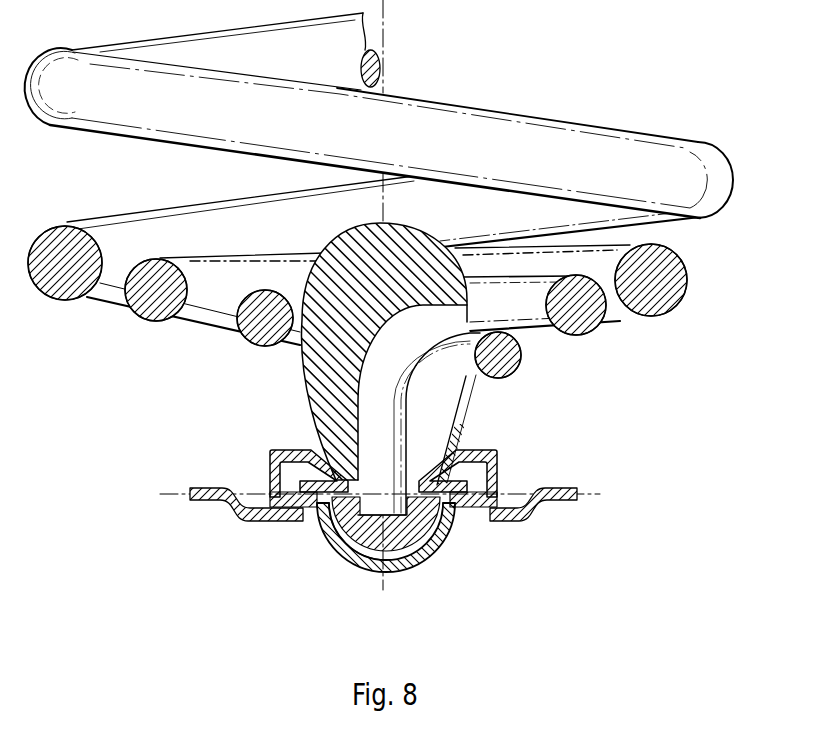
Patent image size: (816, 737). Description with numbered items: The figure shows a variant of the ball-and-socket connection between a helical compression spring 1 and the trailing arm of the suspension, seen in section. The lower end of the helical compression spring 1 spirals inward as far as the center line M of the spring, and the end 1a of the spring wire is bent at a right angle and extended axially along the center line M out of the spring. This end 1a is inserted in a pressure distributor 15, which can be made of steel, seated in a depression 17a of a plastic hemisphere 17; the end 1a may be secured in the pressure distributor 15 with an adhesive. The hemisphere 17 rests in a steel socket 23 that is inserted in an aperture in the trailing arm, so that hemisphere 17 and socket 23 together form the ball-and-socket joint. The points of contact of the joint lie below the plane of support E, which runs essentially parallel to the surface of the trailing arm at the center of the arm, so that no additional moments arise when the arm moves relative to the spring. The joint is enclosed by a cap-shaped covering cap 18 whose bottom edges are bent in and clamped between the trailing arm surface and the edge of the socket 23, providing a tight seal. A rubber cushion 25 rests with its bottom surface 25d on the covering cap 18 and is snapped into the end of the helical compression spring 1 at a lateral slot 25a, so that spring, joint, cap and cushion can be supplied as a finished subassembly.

The helical compression spring 1 is at (538, 130).
The end of the spring wire 1a is at (390, 435).
The pressure distributor 15 is at (437, 490).
The plastic hemisphere 17 is at (416, 571).
The depression 17a is at (352, 570).
The covering cap 18 is at (268, 460).
The steel socket 23 is at (432, 545).
The cushion 25 is at (300, 357).
The lateral slot 25a is at (452, 395).
The bottom surface 25d is at (311, 430).
The center line of the spring M is at (383, 27).
The plane of support E is at (633, 500).